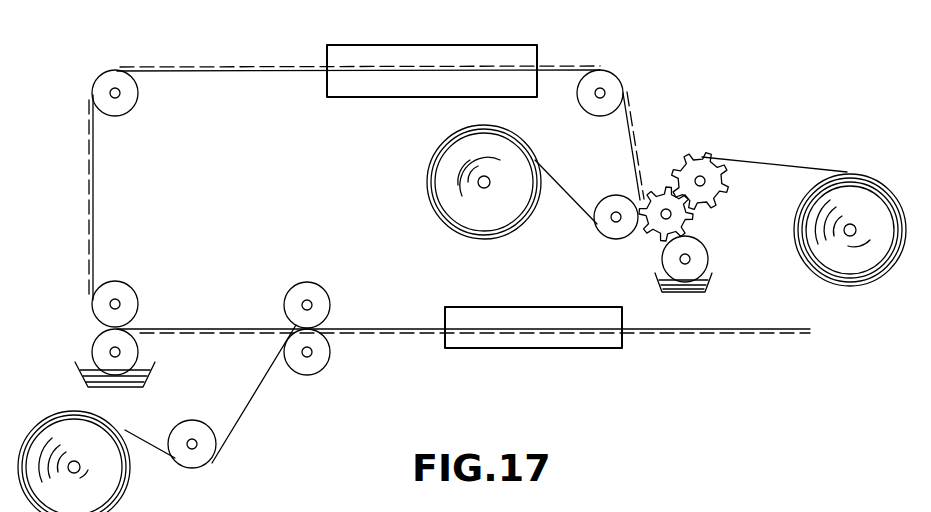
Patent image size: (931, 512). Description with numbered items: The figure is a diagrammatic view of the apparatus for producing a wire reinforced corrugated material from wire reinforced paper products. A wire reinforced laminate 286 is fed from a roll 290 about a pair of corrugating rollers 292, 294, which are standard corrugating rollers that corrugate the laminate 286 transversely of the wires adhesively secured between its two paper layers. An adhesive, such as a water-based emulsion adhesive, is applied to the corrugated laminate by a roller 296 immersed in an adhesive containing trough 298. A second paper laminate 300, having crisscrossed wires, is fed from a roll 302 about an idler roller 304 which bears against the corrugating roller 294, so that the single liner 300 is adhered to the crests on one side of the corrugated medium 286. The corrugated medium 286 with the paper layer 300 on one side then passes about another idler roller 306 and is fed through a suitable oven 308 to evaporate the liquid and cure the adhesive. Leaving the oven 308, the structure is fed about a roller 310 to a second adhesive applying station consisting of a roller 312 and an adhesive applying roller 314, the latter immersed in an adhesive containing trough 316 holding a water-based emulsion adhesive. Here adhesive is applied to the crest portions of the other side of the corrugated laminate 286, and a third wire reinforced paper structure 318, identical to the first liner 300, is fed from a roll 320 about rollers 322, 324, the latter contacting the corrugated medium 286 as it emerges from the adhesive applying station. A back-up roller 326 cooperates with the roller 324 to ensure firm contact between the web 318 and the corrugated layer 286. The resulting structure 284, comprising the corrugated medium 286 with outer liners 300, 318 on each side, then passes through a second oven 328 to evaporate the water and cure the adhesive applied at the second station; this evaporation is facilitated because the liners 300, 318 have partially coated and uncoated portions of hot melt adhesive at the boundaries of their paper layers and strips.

The resulting structure 284 is at (360, 334).
The wire reinforced laminate 286 is at (790, 122).
The roll 290 is at (885, 142).
The corrugating roller 292 is at (712, 181).
The corrugating roller 294 is at (680, 216).
The roller 296 is at (700, 257).
The adhesive containing trough 298 is at (712, 282).
The second paper laminate 300 is at (574, 204).
The roll 302 is at (445, 155).
The idler roller 304 is at (618, 236).
The idler roller 306 is at (590, 112).
The oven 308 is at (520, 53).
The roller 310 is at (135, 100).
The roller 312 is at (125, 290).
The adhesive applying roller 314 is at (97, 345).
The adhesive containing trough 316 is at (150, 368).
The third wire reinforced paper structure 318 is at (135, 431).
The roll 320 is at (118, 497).
The roller 322 is at (212, 453).
The roller 324 is at (318, 358).
The back-up roller 326 is at (311, 292).
The second oven 328 is at (500, 345).